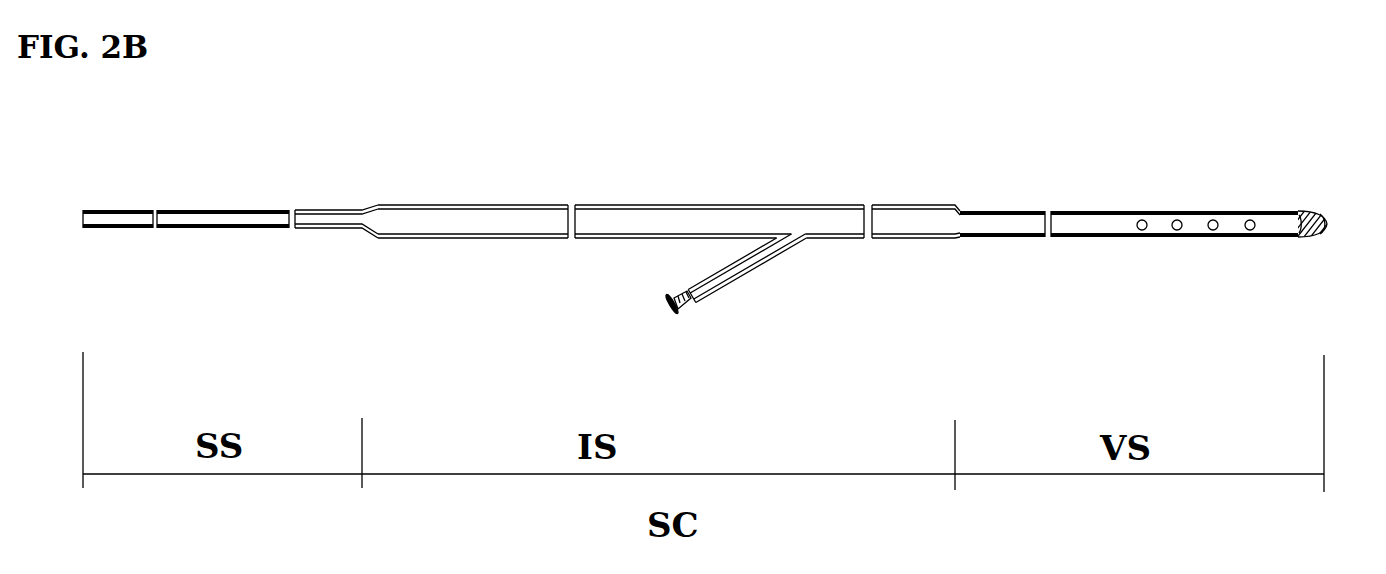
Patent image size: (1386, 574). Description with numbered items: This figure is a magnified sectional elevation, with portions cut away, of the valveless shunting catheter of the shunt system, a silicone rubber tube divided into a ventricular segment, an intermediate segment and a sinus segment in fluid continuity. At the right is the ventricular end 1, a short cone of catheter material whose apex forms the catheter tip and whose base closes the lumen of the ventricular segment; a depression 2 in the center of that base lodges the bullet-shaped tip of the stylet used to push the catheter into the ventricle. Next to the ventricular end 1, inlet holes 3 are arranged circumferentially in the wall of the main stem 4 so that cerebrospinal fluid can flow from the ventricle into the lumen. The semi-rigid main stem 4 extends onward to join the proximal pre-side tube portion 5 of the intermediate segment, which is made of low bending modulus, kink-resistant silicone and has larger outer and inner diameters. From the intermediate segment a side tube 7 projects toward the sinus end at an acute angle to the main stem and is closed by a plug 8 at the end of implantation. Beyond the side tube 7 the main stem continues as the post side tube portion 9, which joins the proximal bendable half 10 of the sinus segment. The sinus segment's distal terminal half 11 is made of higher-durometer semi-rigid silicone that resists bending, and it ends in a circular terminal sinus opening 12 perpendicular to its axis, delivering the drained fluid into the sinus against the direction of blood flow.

The ventricular end 1 is at (1325, 224).
The depression 2 is at (1296, 226).
The inlet holes 3 is at (1183, 237).
The main stem 4 is at (1069, 211).
The pre-side tube portion 5 is at (892, 214).
The side tube 7 is at (726, 270).
The plug 8 is at (684, 306).
The post side tube portion 9 is at (596, 207).
The proximal bendable half 10 is at (313, 214).
The distal terminal half 11 is at (183, 210).
The terminal sinus opening 12 is at (83, 218).